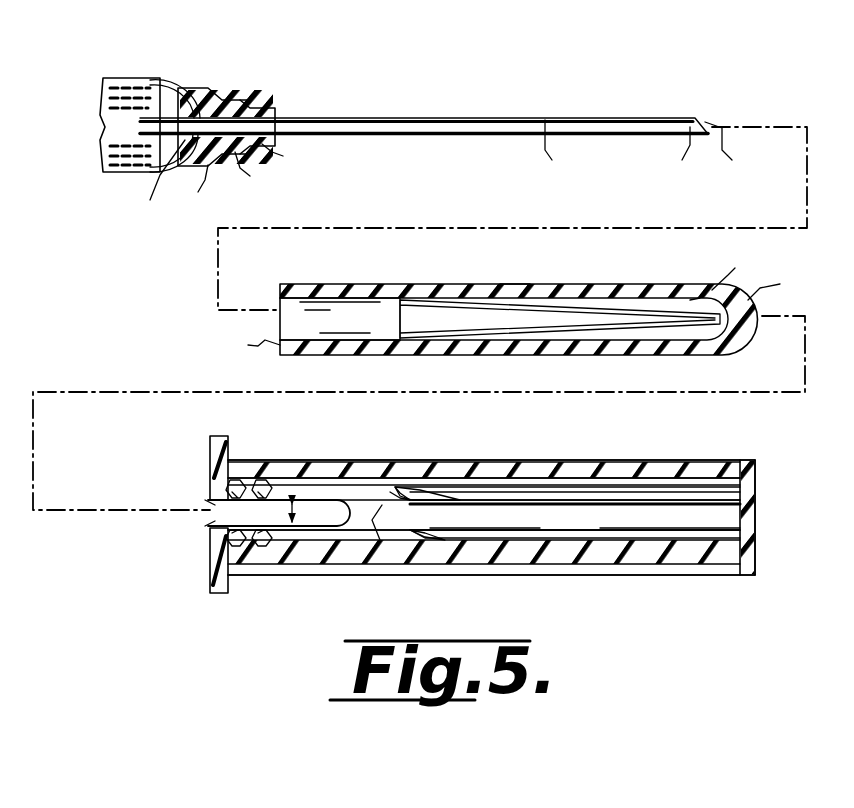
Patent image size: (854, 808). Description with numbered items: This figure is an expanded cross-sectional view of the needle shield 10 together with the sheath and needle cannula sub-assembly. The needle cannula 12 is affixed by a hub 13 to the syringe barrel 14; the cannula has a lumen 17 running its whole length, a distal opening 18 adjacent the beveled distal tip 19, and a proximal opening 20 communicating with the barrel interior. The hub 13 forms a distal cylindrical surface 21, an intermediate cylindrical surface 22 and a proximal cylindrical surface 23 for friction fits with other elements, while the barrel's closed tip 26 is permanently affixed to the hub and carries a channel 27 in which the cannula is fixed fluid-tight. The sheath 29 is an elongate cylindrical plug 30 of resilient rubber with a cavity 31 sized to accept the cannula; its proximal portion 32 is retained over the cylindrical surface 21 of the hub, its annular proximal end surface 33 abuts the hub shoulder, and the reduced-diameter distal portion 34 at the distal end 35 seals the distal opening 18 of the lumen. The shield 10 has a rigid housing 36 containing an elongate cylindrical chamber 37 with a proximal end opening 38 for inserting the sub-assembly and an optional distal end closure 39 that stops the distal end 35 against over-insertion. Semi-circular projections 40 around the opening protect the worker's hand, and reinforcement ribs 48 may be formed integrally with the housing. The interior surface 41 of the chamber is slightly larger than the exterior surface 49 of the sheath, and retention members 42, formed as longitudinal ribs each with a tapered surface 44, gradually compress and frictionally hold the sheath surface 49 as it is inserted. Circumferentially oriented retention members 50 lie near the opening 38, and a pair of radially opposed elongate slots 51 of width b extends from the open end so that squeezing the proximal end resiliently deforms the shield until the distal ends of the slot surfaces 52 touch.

The needle shield 10 is at (670, 590).
The needle cannula 12 is at (465, 137).
The hub 13 is at (225, 95).
The syringe barrel 14 is at (133, 78).
The lumen 17 is at (562, 147).
The distal opening 18 is at (683, 156).
The beveled distal tip 19 is at (732, 147).
The proximal opening 20 is at (128, 160).
The distal cylindrical surface 21 is at (286, 157).
The intermediate cylindrical surface 22 is at (252, 171).
The proximal cylindrical surface 23 is at (195, 189).
The closed tip 26 is at (158, 183).
The channel 27 is at (175, 92).
The sheath 29 is at (598, 290).
The elongate cylindrical plug 30 is at (545, 470).
The cavity 31 is at (440, 322).
The proximal portion 32 is at (345, 318).
The proximal end surface 33 is at (251, 345).
The distal portion 34 is at (717, 274).
The distal end 35 is at (777, 282).
The housing 36 is at (552, 572).
The chamber 37 is at (586, 531).
The proximal end opening 38 is at (215, 510).
The distal end closure 39 is at (752, 485).
The semi-circular projections 40 is at (228, 445).
The interior surface 41 is at (380, 540).
The retention member 42 is at (462, 500).
The tapered surface 44 is at (395, 487).
The reinforcement ribs 48 is at (640, 460).
The exterior surface 49 is at (512, 285).
The circumferentially oriented retention members 50 is at (230, 485).
The elongate slots 51 is at (328, 520).
The slot surfaces 52 is at (215, 498).
The slot width b is at (300, 510).